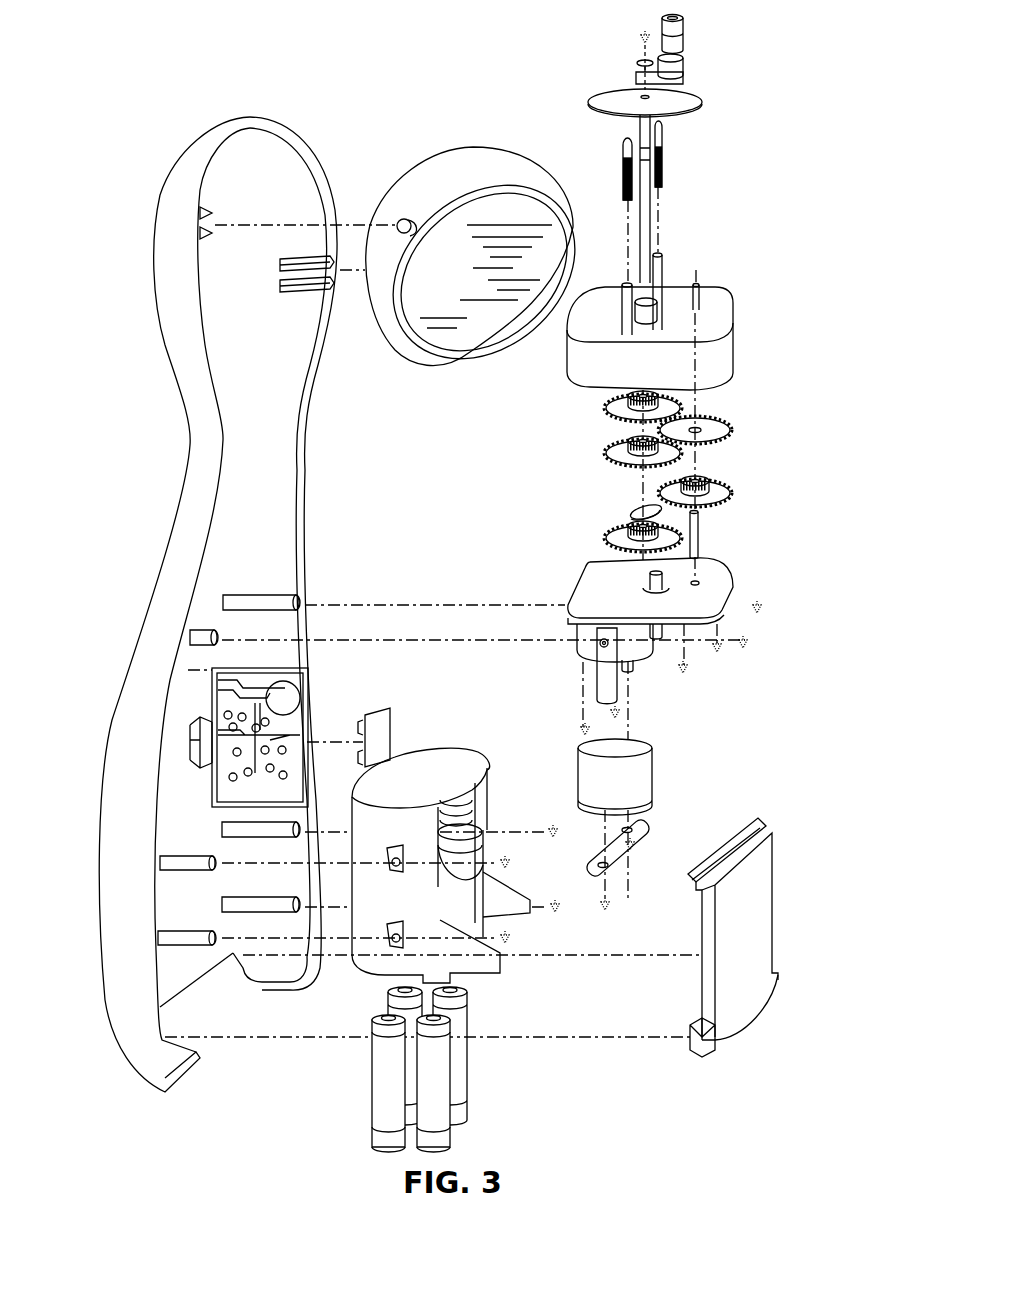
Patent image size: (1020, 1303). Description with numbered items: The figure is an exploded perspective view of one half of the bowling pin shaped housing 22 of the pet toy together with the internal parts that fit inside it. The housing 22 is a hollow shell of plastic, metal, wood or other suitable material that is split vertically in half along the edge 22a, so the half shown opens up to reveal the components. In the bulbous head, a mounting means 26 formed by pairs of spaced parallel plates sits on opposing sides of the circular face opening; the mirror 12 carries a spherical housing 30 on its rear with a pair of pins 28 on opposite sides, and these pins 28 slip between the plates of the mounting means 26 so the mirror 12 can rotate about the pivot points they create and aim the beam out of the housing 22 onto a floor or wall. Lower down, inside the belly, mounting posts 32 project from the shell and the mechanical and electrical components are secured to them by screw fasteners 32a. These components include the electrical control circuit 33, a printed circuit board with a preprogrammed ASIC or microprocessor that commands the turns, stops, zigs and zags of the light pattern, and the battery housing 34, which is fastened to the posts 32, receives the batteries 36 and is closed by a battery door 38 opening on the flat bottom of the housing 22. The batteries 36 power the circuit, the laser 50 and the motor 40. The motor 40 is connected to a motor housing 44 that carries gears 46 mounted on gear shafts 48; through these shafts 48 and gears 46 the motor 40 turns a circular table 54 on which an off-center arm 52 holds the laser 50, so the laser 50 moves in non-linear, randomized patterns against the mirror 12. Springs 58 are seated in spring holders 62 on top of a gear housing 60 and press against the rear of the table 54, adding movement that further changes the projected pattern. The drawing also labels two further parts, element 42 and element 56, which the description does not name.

The mirror 12 is at (472, 337).
The housing 22 is at (165, 266).
The edge 22a is at (220, 372).
The mounting means 26 is at (210, 212).
The pins 28 is at (413, 222).
The spherical housing 30 is at (484, 153).
The mounting posts 32 is at (282, 594).
The screw fasteners 32a is at (752, 647).
The electrical control circuit 33 is at (287, 698).
The battery housing 34 is at (425, 753).
The batteries 36 is at (387, 1067).
The battery door 38 is at (760, 912).
The motor 40 is at (642, 770).
The bracket 42 is at (627, 842).
The motor housing 44 is at (598, 582).
The gears 46 is at (717, 427).
The gear shafts 48 is at (700, 533).
The laser 50 is at (682, 30).
The arm 52 is at (676, 70).
The circular table 54 is at (625, 92).
The screw 56 is at (640, 32).
The springs 58 is at (623, 162).
The gear housing 60 is at (728, 342).
The spring holders 62 is at (622, 295).